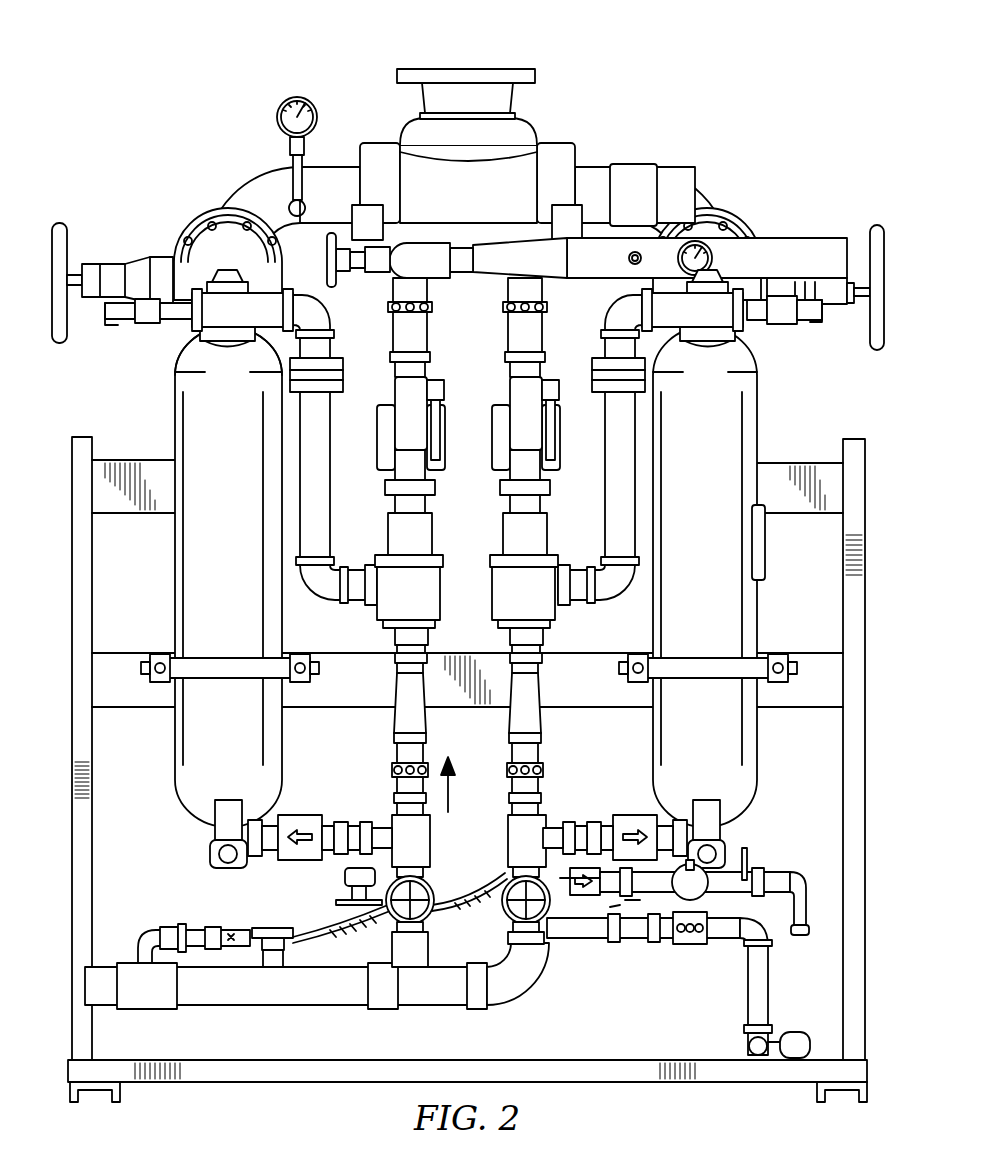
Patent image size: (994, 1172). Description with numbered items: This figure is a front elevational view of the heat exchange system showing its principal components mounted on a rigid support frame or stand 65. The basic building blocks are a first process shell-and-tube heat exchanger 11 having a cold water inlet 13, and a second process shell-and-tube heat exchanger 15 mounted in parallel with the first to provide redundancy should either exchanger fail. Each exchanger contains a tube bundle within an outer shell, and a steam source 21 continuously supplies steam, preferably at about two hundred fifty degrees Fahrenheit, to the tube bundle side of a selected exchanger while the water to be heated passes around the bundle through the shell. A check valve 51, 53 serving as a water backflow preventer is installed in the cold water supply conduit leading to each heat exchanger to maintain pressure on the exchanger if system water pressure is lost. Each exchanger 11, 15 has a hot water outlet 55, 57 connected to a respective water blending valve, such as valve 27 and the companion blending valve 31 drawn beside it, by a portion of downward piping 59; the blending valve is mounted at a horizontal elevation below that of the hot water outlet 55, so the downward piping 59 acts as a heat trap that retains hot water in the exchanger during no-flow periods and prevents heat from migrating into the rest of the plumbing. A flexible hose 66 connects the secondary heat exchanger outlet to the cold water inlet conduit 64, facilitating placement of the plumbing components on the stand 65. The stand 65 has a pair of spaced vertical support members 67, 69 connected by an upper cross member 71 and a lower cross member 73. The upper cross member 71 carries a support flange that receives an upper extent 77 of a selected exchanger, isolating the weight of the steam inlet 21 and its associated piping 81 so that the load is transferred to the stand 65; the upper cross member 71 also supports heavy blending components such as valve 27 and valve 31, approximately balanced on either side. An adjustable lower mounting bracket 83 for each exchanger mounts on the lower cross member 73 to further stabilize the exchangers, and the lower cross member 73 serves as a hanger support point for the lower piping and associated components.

The first process shell-and-tube heat exchanger 11 is at (199, 597).
The cold water inlet 13 is at (222, 800).
The second process shell-and-tube heat exchanger 15 is at (652, 618).
The steam source 21 is at (462, 70).
The water blending valve 27 is at (446, 432).
The second control valve 31 is at (542, 395).
The check valve 51 is at (300, 815).
The check valve 53 is at (632, 815).
The hot water outlet 55 is at (229, 320).
The hot water outlet 57 is at (706, 320).
The downward piping 59 is at (333, 447).
The cold water inlet conduit 64 is at (270, 1005).
The support stand 65 is at (475, 740).
The flexible hose 66 is at (228, 930).
The vertical support member 67 is at (95, 776).
The vertical support member 69 is at (843, 776).
The upper cross member 71 is at (825, 463).
The lower cross member 73 is at (825, 657).
The upper extent of process heat exchanger 77 is at (205, 398).
The associated piping 81 is at (205, 240).
The adjustable lower mounting bracket 83 is at (703, 656).